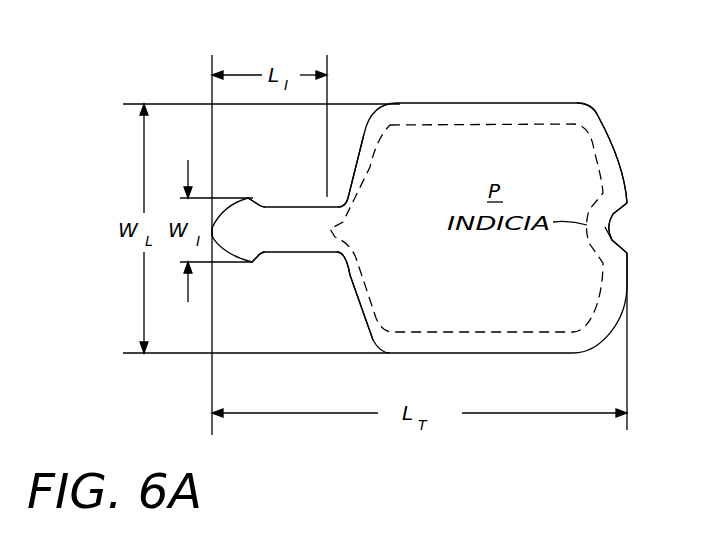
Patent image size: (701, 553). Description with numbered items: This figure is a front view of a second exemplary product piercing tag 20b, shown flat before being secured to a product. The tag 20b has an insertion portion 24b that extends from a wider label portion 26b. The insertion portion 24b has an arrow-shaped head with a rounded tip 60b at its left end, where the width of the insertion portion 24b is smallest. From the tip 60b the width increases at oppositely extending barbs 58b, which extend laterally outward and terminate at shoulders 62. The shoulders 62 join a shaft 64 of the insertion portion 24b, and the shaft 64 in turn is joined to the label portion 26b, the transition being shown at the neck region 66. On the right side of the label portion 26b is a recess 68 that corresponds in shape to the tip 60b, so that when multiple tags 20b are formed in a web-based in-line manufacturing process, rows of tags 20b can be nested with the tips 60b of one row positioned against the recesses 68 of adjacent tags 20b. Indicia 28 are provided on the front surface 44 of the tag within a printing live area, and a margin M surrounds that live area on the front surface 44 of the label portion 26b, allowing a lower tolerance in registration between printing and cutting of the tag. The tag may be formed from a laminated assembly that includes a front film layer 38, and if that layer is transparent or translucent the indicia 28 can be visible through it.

The tag 20b is at (575, 86).
The label portion 26b is at (496, 140).
The front surface 44 is at (430, 155).
The margin M is at (590, 122).
The recess 68 is at (612, 216).
The indicia 28 is at (608, 230).
The front film layer 38 is at (525, 306).
The shaft 64 is at (315, 210).
The lower neck edge 66 is at (340, 237).
The insertion portion 24b is at (302, 234).
The tip 60b is at (211, 226).
The barbs 58b is at (250, 197).
The shoulders 62 is at (268, 204).